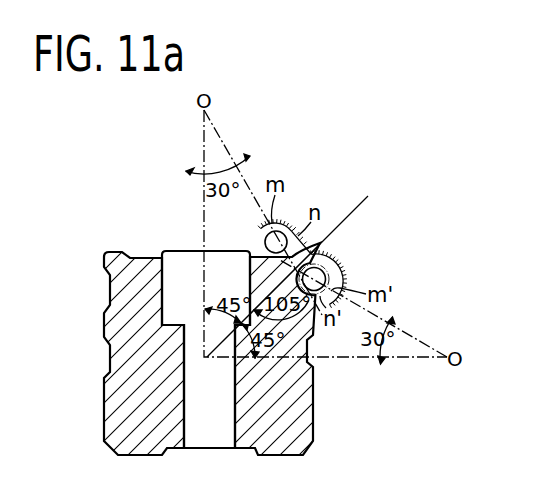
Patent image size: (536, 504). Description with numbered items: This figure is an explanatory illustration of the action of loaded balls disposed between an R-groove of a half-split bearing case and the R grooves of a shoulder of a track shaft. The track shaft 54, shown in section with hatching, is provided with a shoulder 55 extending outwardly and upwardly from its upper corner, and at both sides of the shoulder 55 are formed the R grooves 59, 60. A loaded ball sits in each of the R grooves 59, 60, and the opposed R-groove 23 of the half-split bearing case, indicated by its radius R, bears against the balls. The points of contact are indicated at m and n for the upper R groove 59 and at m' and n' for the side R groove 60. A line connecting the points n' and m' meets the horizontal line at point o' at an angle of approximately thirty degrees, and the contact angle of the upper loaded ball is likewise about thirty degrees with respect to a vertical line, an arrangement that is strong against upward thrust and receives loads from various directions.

The track shaft 54 is at (287, 441).
The shoulder 55 is at (304, 257).
The R groove 59 is at (267, 259).
The R groove 60 is at (318, 267).
The R-groove 23 is at (286, 233).